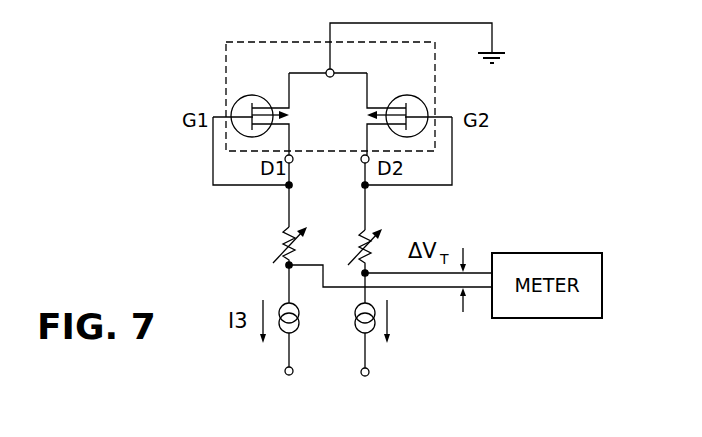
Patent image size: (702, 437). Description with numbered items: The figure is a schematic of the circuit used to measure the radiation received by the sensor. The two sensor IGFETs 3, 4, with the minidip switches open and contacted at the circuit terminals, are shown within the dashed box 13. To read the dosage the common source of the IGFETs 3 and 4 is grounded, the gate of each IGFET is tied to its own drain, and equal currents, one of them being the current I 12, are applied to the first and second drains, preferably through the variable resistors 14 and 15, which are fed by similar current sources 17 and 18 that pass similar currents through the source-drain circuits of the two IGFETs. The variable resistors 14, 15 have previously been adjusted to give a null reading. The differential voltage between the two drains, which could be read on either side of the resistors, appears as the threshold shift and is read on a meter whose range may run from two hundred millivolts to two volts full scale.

The sensor IGFET 3 is at (262, 96).
The sensor IGFET 4 is at (396, 97).
The dashed box 13 is at (222, 62).
The variable resistor 14 is at (289, 240).
The variable resistor 15 is at (376, 243).
The current source 17 is at (286, 336).
The current source 18 is at (368, 336).
The current I2 (current source branch) 12 is at (403, 321).